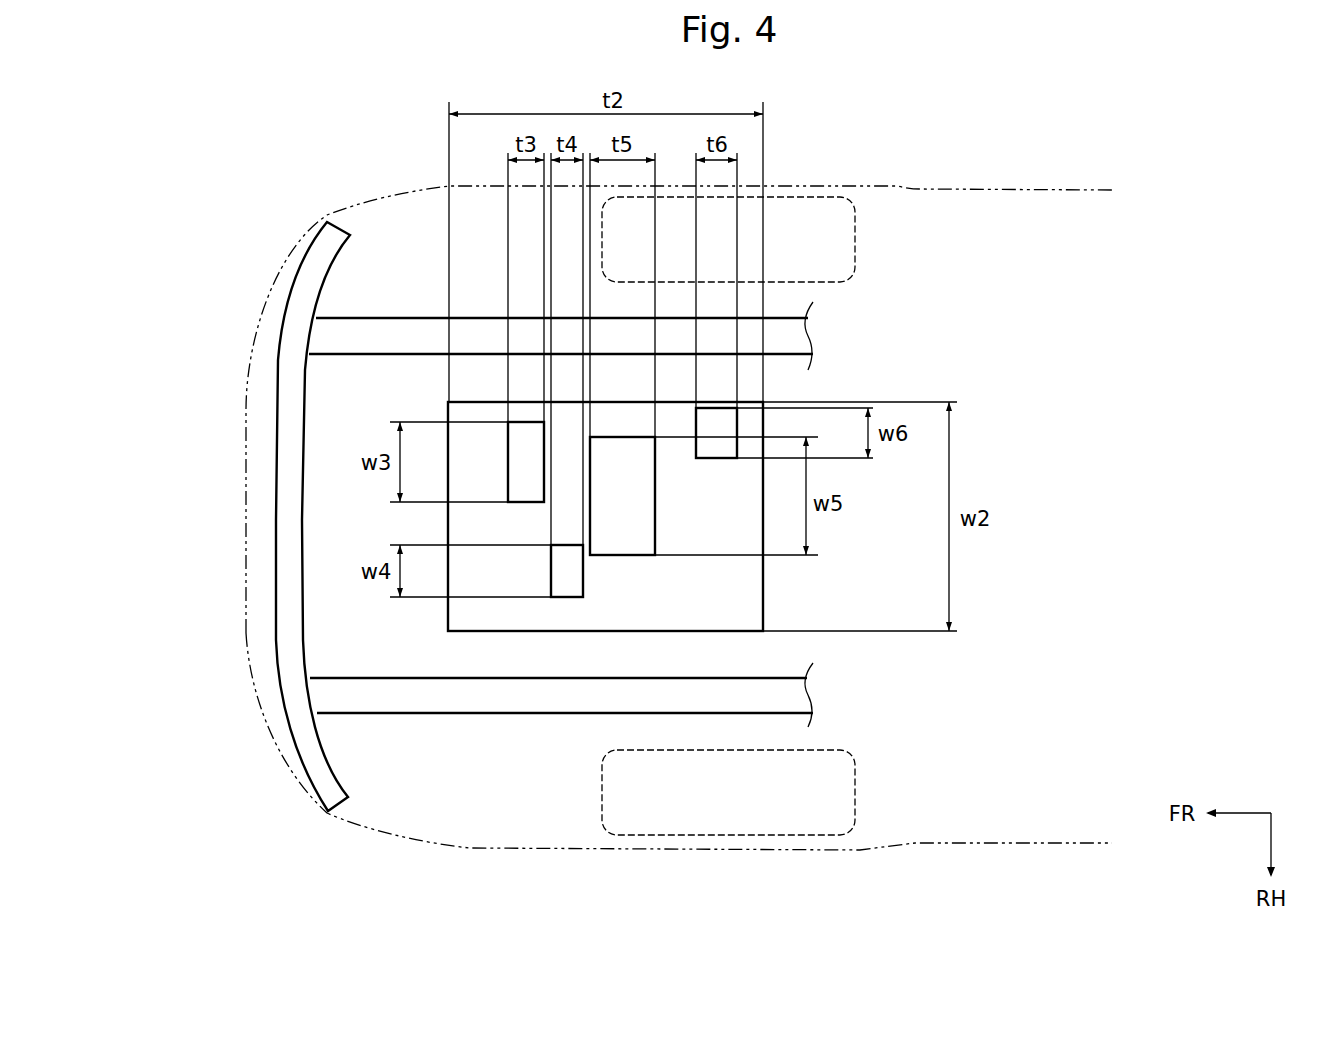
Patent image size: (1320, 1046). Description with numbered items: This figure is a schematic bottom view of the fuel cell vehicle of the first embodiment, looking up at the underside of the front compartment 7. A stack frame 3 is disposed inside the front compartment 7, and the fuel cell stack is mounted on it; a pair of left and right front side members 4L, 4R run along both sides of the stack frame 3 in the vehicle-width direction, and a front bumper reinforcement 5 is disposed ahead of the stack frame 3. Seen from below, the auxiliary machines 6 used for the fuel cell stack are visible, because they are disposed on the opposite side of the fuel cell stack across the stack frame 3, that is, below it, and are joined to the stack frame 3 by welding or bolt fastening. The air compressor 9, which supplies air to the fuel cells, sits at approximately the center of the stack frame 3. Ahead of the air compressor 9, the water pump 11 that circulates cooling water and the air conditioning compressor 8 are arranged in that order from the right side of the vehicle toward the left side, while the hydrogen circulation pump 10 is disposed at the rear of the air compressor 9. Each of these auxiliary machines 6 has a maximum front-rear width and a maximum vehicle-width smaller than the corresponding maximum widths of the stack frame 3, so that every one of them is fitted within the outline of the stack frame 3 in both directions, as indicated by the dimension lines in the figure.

The stack frame 3 is at (752, 595).
The left front side member 4L is at (405, 338).
The right front side member 4R is at (405, 695).
The front bumper reinforcement 5 is at (280, 528).
The auxiliary machines 6 is at (639, 561).
The front compartment 7 is at (385, 603).
The air conditioning compressor 8 is at (517, 467).
The air compressor 9 is at (645, 527).
The hydrogen circulation pump 10 is at (727, 427).
The water pump 11 is at (567, 583).